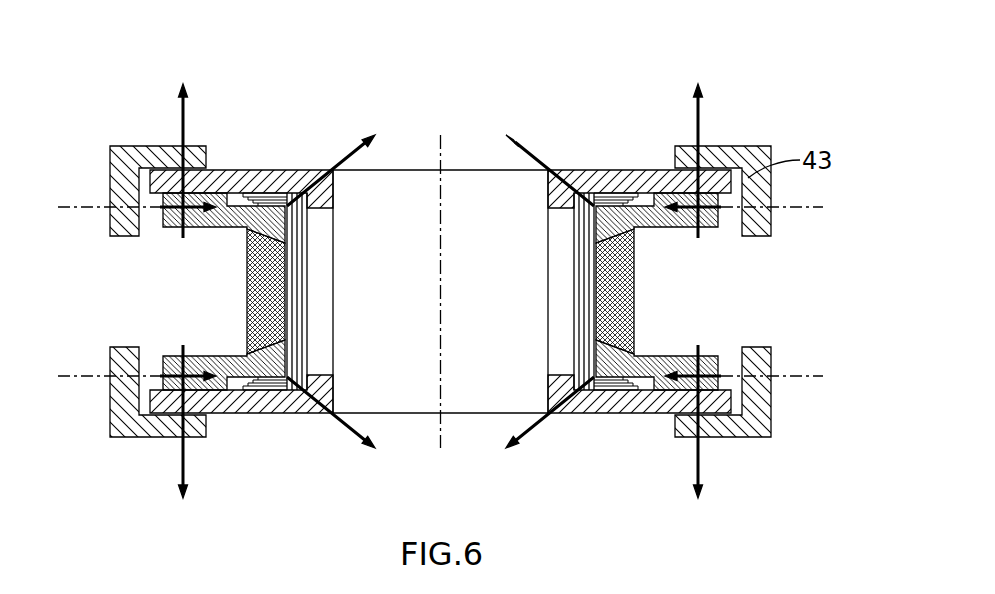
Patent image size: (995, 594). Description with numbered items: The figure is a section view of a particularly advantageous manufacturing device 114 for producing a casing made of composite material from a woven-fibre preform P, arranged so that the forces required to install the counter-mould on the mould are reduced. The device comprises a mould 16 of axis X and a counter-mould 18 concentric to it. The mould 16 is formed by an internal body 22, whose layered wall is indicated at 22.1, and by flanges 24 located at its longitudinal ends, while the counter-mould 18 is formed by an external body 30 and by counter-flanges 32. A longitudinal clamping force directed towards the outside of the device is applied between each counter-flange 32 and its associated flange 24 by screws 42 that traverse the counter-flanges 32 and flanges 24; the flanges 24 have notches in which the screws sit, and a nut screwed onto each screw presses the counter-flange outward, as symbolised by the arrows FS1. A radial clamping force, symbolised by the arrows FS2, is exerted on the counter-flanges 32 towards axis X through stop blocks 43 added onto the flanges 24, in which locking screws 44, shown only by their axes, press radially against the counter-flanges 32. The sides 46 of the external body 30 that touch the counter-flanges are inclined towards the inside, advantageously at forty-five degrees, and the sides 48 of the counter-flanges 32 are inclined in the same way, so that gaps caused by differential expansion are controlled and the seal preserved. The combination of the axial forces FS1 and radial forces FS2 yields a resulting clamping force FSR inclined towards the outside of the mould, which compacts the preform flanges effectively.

The manufacturing device 114 is at (592, 78).
The mould 16 is at (323, 137).
The counter-mould 18 is at (152, 292).
The internal body 22 is at (330, 266).
The laminated layers of sleeve 22.1 is at (302, 308).
The flanges 24 is at (247, 172).
The external body 30 is at (247, 272).
The counter-flanges 32 is at (714, 362).
The screws 42 is at (735, 175).
The stop blocks 43 is at (112, 152).
The locking screws 44 is at (78, 202).
The sides of external body 46 is at (634, 357).
The sides of counter-flanges 48 is at (597, 253).
The preform P is at (294, 227).
The axial clamping forces FS1 is at (185, 107).
The radial clamping forces FS2 is at (168, 148).
The resulting clamping force FSR is at (355, 157).